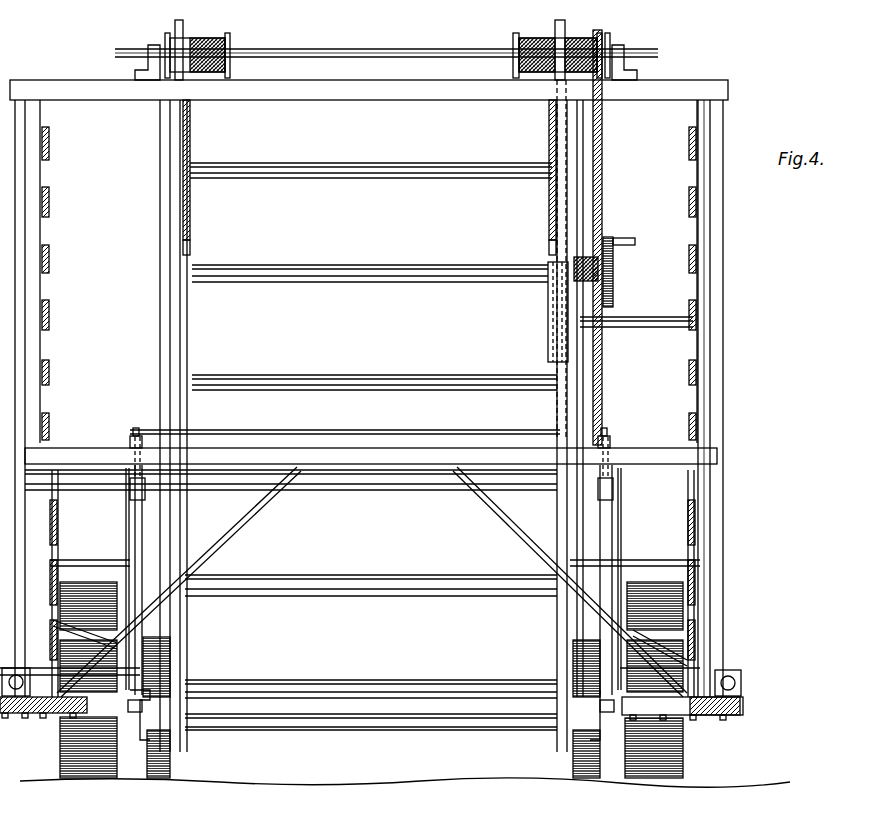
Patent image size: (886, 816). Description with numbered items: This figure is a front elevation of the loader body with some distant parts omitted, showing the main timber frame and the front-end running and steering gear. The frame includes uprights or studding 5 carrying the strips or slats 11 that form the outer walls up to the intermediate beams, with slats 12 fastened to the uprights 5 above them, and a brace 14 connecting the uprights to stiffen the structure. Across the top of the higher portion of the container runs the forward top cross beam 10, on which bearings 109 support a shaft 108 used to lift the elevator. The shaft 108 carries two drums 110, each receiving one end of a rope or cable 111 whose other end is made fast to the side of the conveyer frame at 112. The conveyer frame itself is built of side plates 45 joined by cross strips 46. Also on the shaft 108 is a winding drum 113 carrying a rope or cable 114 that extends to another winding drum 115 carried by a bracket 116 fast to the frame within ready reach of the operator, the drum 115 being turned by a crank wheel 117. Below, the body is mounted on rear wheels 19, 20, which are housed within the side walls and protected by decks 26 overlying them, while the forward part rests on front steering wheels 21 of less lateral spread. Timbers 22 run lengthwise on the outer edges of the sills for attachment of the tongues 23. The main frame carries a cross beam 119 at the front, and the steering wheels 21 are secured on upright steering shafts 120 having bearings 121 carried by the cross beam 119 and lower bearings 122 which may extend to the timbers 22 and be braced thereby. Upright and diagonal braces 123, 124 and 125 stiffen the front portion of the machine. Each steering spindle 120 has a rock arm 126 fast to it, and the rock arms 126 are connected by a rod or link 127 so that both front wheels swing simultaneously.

The uprights or studding 5 is at (705, 288).
The cross timber 10 is at (332, 88).
The strips or slats 11 is at (57, 518).
The strips or slats 12 is at (55, 228).
The brace 14 is at (724, 249).
The rear wheel 19 is at (60, 760).
The rear wheel 20 is at (684, 760).
The front steering wheel 21 is at (170, 765).
The timber 22 is at (20, 712).
The tongue 23 is at (14, 676).
The top portion or deck 26 is at (82, 566).
The side plate 45 is at (188, 318).
The cross strip 46 is at (380, 170).
The shaft 108 is at (371, 49).
The bearing 109 is at (152, 45).
The drum 110 is at (178, 48).
The rope or cable 111 is at (192, 130).
The cable attachment 112 is at (190, 240).
The winding drum 113 is at (606, 35).
The rope or cable 114 is at (603, 162).
The winding drum 115 is at (600, 270).
The bracket 116 is at (548, 313).
The crank wheel 117 is at (612, 237).
The cross beam 119 is at (380, 457).
The upright steering shaft 120 is at (143, 532).
The bearing 121 is at (130, 488).
The bearing 122 is at (150, 678).
The upright brace 123 is at (126, 515).
The brace 124 is at (72, 668).
The diagonal brace 125 is at (210, 548).
The rock arm 126 is at (130, 436).
The rod or link 127 is at (345, 436).